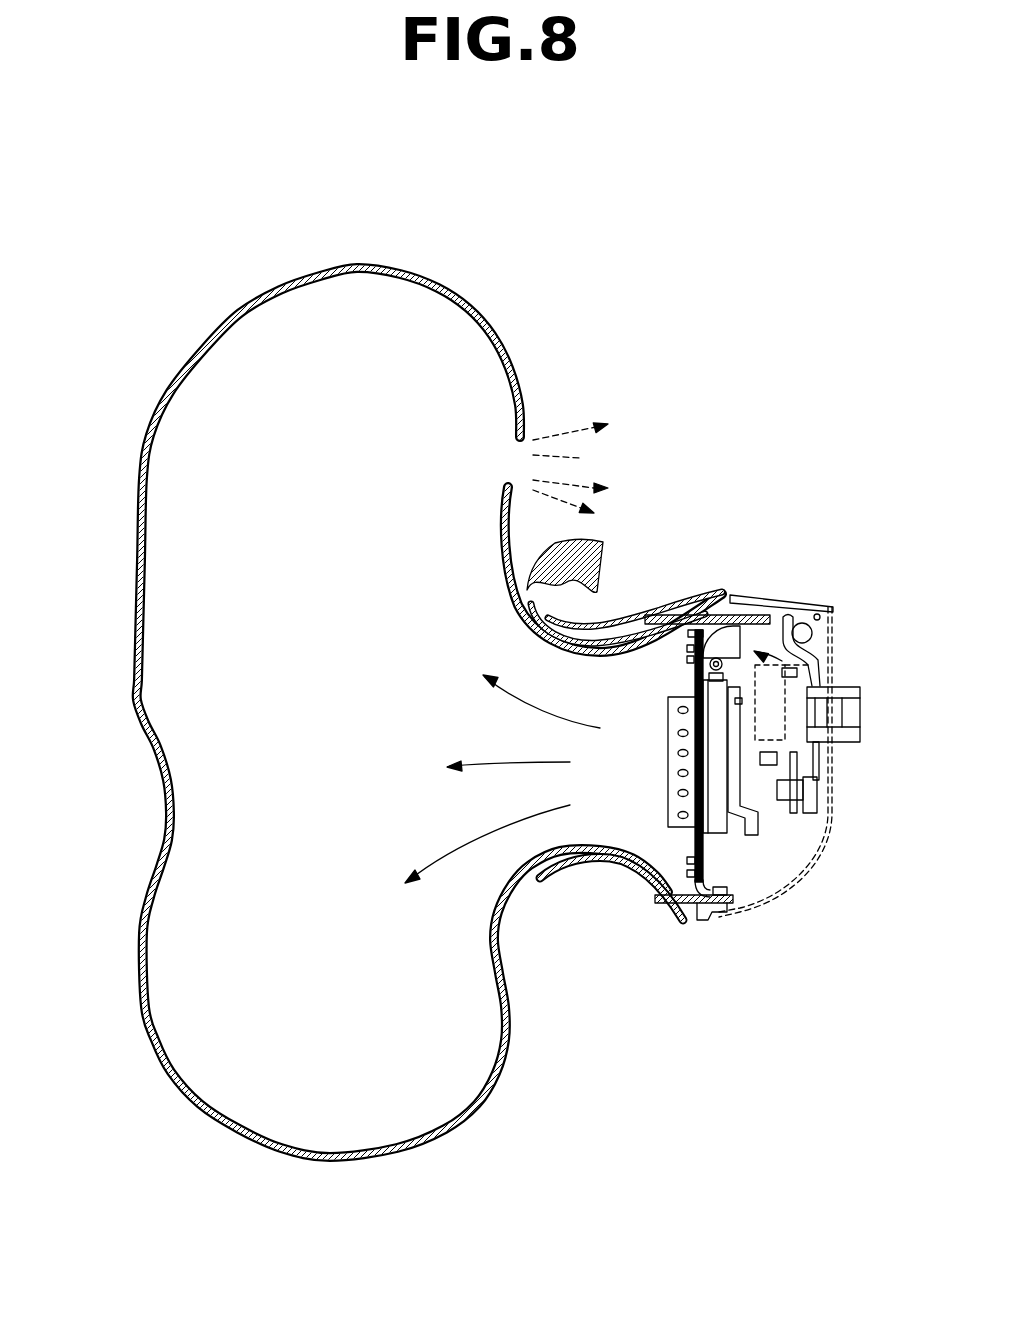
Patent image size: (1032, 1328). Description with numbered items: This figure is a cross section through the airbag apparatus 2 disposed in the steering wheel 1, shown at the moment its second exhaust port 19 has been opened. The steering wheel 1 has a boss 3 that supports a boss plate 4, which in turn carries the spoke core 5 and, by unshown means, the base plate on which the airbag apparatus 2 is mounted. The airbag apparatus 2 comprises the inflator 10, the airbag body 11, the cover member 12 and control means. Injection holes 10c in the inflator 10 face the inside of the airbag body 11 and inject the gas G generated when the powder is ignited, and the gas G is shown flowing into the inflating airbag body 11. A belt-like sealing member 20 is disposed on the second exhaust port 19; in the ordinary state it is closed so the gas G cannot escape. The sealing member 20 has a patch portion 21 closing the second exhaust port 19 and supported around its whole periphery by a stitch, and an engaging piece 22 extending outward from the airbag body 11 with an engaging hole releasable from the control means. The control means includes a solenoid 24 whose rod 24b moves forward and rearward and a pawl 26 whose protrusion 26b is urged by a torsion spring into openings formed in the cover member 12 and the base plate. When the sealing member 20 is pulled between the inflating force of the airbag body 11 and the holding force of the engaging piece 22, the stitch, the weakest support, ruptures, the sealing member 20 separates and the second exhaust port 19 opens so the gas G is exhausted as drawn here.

The steering wheel 1 is at (755, 733).
The airbag apparatus 2 is at (389, 712).
The boss 3 is at (852, 693).
The boss plate 4 is at (790, 598).
The spoke core 5 is at (845, 625).
The inflator 10 is at (690, 808).
The injection holes 10c is at (668, 708).
The airbag body 11 is at (156, 1068).
The cover member 12 is at (580, 627).
The second exhaust port 19 is at (528, 434).
The sealing member 20 is at (614, 515).
The patch portion 21 is at (603, 551).
The engaging piece 22 is at (763, 617).
The solenoid 24 is at (723, 672).
The rod 24b is at (755, 690).
The pawl 26 is at (814, 680).
The protrusion 26b is at (737, 617).
The gas G is at (435, 917).